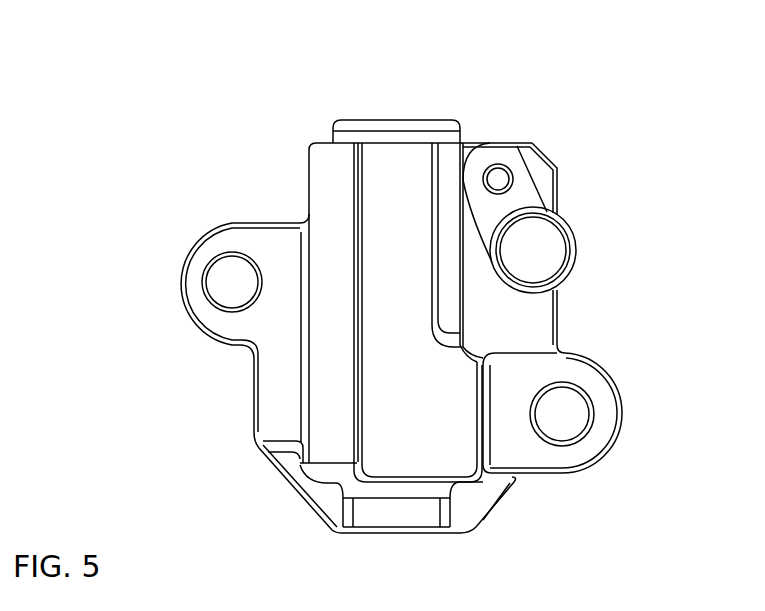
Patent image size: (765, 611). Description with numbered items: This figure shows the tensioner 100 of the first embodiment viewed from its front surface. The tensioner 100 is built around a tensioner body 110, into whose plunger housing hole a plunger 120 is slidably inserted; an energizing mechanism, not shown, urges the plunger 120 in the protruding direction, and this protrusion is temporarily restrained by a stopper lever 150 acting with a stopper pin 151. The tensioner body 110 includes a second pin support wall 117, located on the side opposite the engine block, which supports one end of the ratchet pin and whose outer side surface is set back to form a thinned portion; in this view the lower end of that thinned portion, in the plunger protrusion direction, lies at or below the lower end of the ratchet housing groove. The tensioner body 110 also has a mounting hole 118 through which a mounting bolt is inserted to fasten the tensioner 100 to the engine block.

The tensioner 100 is at (166, 93).
The tensioner body 110 is at (333, 382).
The second pin support wall 117 is at (545, 172).
The mounting hole 118 is at (233, 285).
The plunger 120 is at (394, 137).
The stopper lever 150 is at (530, 200).
The stopper pin 151 is at (542, 248).